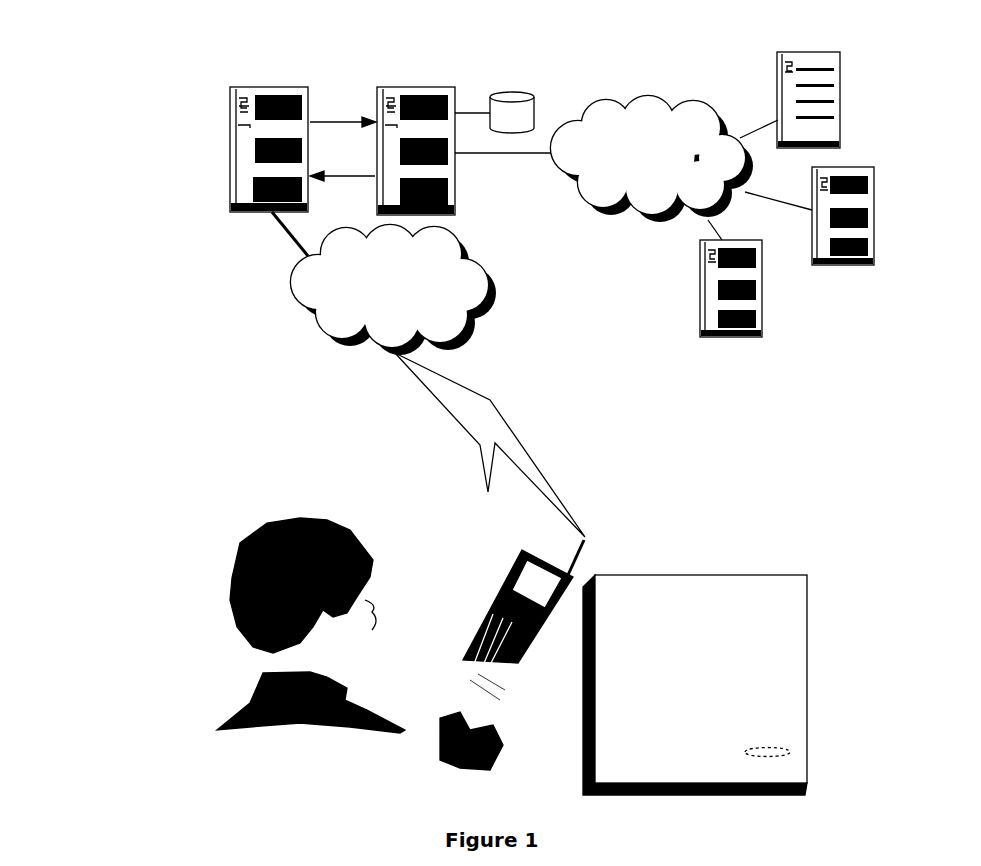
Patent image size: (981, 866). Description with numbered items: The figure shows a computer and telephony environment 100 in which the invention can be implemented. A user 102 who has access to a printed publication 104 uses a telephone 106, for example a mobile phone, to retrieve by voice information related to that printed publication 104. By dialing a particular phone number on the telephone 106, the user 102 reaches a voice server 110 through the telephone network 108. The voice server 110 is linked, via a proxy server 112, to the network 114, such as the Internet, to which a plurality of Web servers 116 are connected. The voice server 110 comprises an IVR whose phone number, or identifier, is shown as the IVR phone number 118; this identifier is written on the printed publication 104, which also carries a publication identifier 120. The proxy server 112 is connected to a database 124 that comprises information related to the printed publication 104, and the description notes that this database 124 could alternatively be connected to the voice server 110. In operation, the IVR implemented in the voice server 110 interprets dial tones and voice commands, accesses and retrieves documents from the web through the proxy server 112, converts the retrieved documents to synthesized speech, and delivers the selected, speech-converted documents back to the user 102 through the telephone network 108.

The computer and telephony environment 100 is at (128, 41).
The user 102 is at (270, 728).
The printed publication 104 is at (710, 575).
The telephone 106 is at (488, 610).
The telephone network 108 is at (333, 335).
The voice server 110 is at (283, 86).
The proxy server 112 is at (421, 86).
The network 114 is at (626, 216).
The Web servers 116 is at (847, 267).
The IVR phone number 118 is at (233, 279).
The publication identifier 120 is at (783, 757).
The database 124 is at (510, 79).